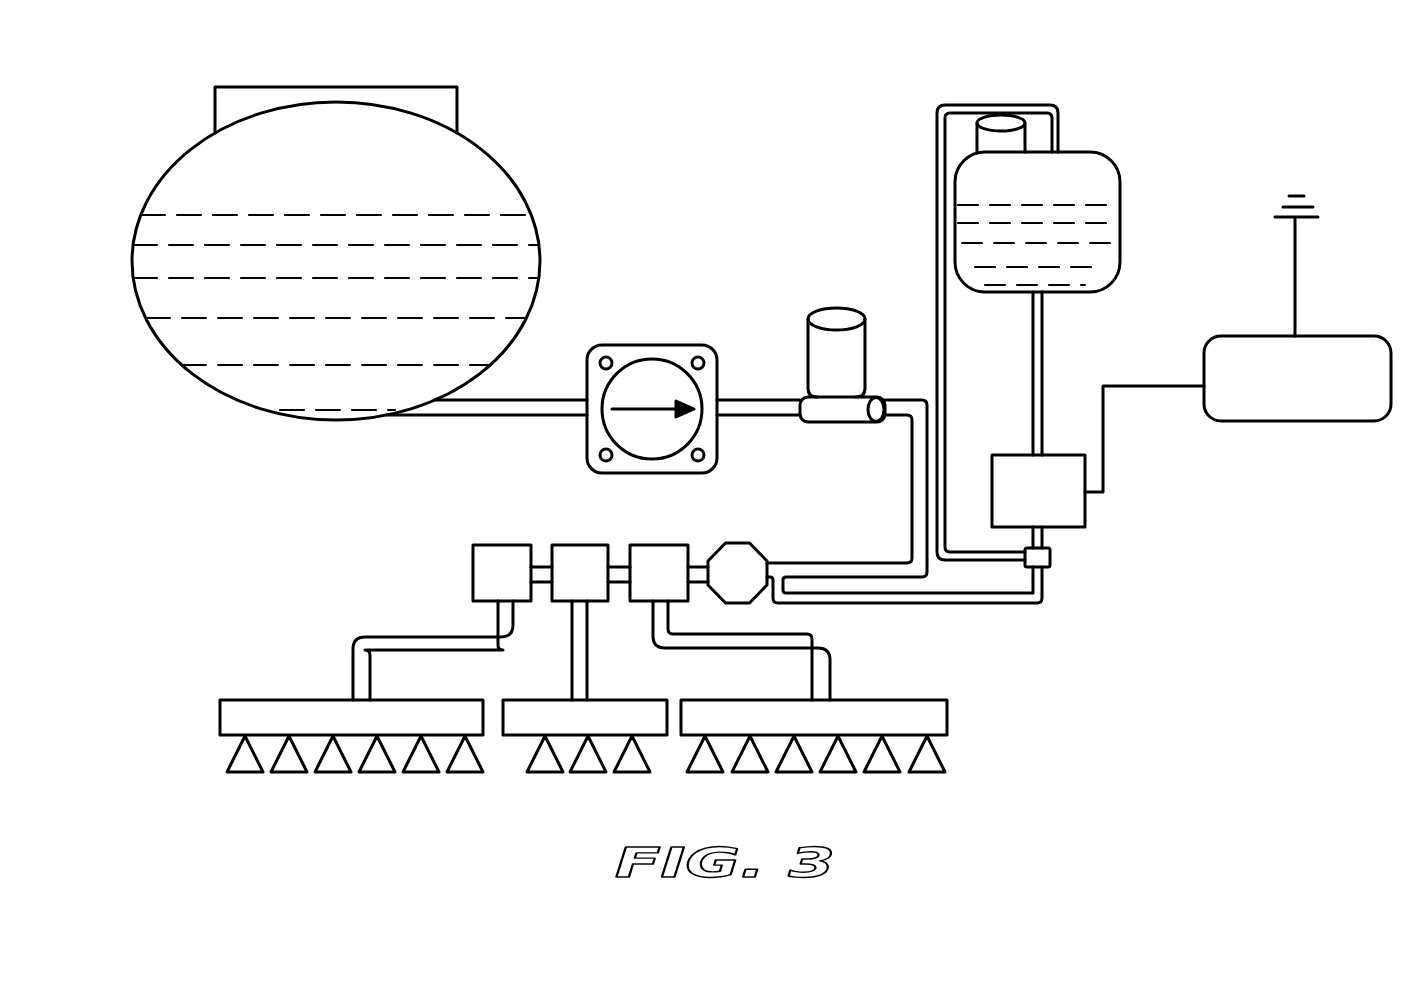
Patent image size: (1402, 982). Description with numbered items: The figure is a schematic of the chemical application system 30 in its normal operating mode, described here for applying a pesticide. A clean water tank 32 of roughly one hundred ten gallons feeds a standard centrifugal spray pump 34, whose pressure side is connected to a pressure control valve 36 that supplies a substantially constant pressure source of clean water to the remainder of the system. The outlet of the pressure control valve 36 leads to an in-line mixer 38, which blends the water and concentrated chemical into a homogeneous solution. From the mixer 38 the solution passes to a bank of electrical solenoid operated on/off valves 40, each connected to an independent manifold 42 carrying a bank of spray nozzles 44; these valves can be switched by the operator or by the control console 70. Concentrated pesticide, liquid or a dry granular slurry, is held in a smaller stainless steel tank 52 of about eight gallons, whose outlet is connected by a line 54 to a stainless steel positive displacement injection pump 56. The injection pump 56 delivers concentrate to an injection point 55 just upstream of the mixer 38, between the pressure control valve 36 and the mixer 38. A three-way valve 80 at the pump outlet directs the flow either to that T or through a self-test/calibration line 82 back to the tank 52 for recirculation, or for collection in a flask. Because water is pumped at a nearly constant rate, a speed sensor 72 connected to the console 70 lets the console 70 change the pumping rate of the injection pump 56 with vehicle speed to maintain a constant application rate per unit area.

The chemical application system 30 is at (170, 142).
The clean water tank 32 is at (513, 183).
The centrifugal spray pump 34 is at (645, 345).
The pressure control valve 36 is at (823, 307).
The in-line mixer 38 is at (737, 543).
The solenoid operated on/off valves 40 is at (570, 503).
The manifold 42 is at (298, 700).
The spray nozzles 44 is at (357, 788).
The pesticide tank 52 is at (1088, 152).
The line 54 is at (1043, 348).
The chemical injection flow 55 is at (1046, 445).
The positive displacement injection pump 56 is at (1005, 455).
The control console 70 is at (1302, 421).
The speed sensor 72 is at (1248, 70).
The 3-way valve 80 is at (1052, 558).
The self-test/calibration line 82 is at (937, 280).